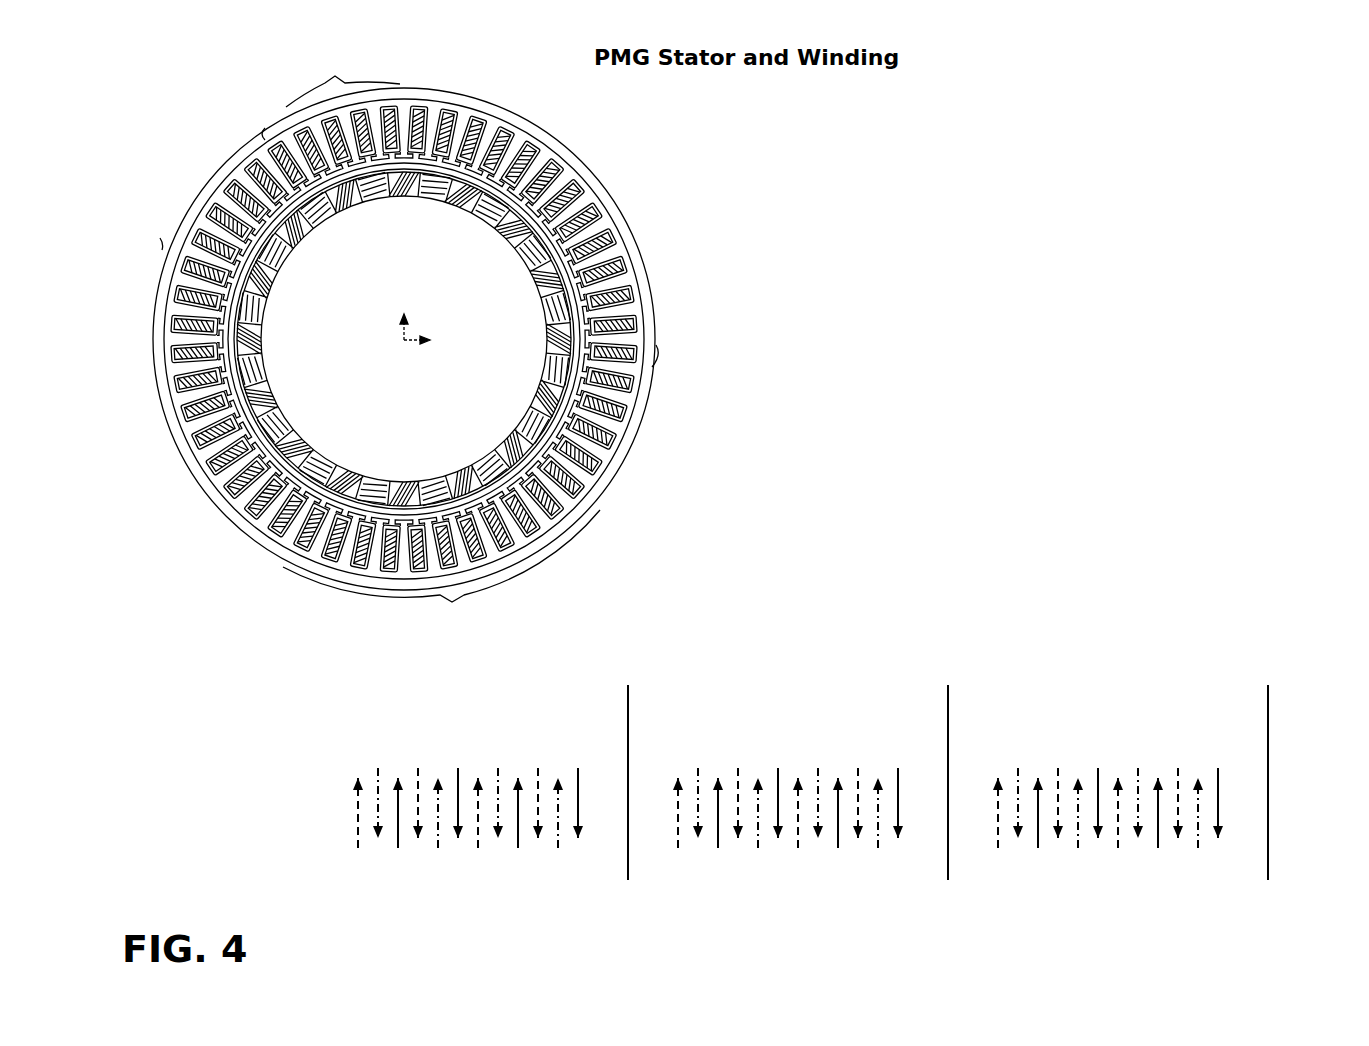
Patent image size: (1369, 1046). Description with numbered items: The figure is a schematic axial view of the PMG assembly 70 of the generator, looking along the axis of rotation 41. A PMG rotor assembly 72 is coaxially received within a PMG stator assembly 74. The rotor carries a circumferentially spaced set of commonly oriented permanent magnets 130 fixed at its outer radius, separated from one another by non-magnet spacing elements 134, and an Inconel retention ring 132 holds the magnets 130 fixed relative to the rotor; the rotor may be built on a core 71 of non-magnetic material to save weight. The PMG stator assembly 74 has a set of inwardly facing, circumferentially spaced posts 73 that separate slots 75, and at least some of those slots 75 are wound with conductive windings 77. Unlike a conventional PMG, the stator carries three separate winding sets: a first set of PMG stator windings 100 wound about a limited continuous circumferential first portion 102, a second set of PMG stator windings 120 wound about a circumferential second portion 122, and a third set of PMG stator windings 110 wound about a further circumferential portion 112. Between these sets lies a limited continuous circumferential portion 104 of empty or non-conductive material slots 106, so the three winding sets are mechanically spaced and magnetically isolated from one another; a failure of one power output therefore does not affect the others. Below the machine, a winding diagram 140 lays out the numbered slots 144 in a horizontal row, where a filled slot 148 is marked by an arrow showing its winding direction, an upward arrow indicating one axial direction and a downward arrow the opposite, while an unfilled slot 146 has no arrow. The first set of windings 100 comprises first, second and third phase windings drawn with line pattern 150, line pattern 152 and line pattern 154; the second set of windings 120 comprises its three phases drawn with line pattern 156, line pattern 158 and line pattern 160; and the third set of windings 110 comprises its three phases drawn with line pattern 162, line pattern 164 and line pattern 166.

The axis of rotation 41 is at (414, 332).
The PMG assembly 70 is at (404, 309).
The core 71 is at (404, 339).
The PMG rotor assembly 72 is at (543, 339).
The posts 73 is at (462, 150).
The PMG stator assembly 74 is at (620, 239).
The slots 75 is at (421, 103).
The conductive windings 77 is at (595, 213).
The first set of PMG stator windings 100 is at (534, 534).
The circumferential first portion 102 is at (598, 123).
The circumferential portion of empty or non-conductive slots 104 is at (728, 472).
The empty or non-conductive material slots 106 is at (315, 114).
The third set of PMG stator windings 110 is at (524, 523).
The circumferential portion for third windings 112 is at (441, 565).
The second set of PMG stator windings 120 is at (193, 400).
The circumferential second portion 122 is at (163, 247).
The permanent magnets 130 is at (536, 434).
The Inconel retention ring 132 is at (551, 347).
The non-magnet spacing elements 134 is at (403, 511).
The winding diagram 140 is at (1246, 664).
The numbered slots 144 is at (854, 684).
The unfilled slot 146 is at (961, 724).
The filled slot 148 is at (1019, 724).
The line pattern for PMG phase 1A 150 is at (327, 936).
The line pattern for PMG phase 1B 152 is at (444, 936).
The line pattern for PMG phase 1C 154 is at (555, 936).
The line pattern for PMG phase 2A 156 is at (664, 936).
The line pattern for PMG phase 2B 158 is at (772, 936).
The line pattern for PMG phase 2C 160 is at (877, 936).
The line pattern for PMG phase 3A 162 is at (997, 936).
The line pattern for PMG phase 3B 164 is at (1094, 936).
The line pattern for PMG phase 3C 166 is at (1202, 936).